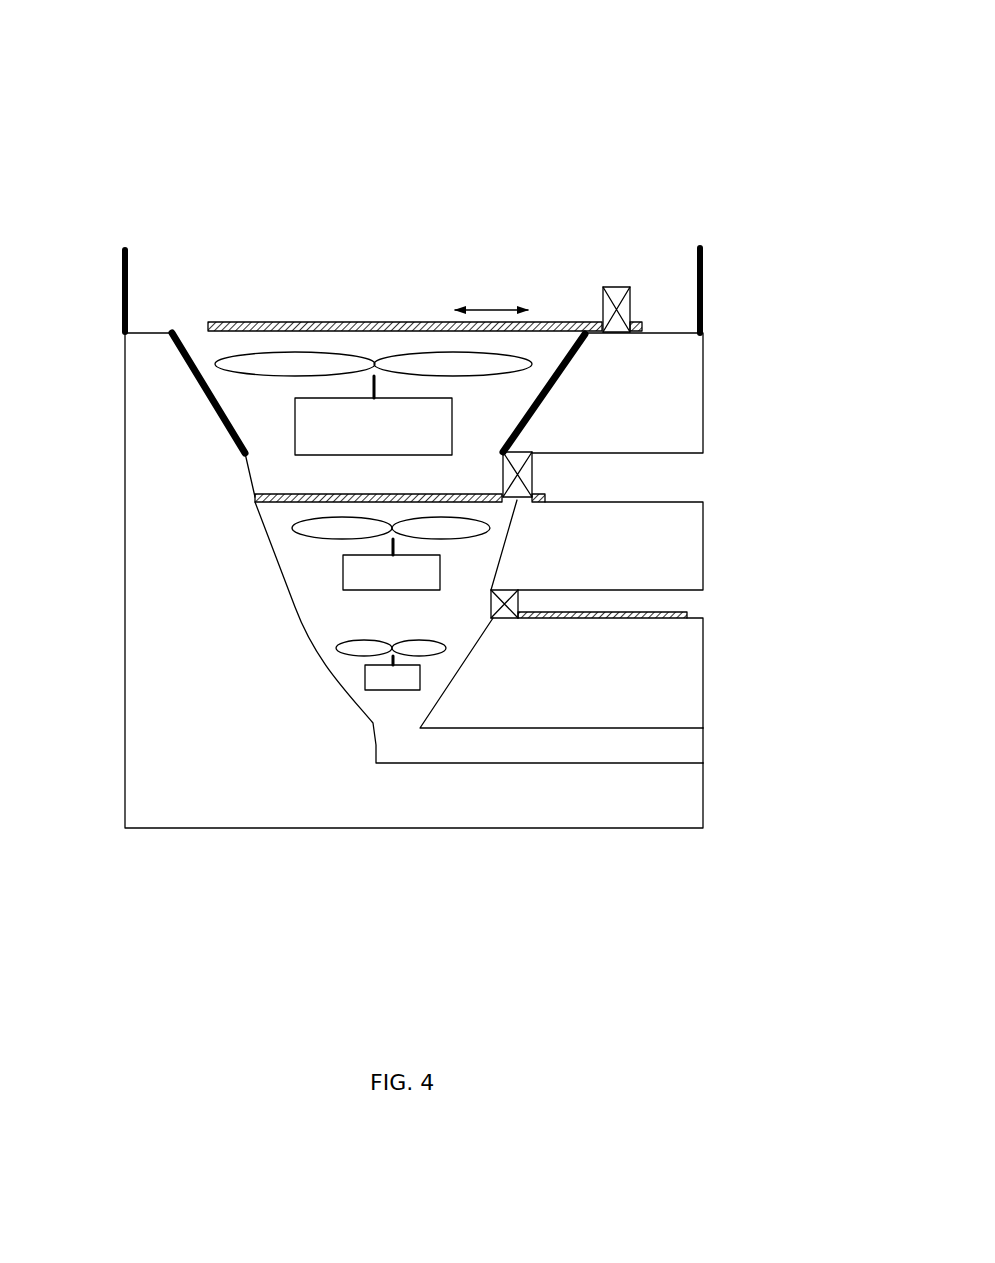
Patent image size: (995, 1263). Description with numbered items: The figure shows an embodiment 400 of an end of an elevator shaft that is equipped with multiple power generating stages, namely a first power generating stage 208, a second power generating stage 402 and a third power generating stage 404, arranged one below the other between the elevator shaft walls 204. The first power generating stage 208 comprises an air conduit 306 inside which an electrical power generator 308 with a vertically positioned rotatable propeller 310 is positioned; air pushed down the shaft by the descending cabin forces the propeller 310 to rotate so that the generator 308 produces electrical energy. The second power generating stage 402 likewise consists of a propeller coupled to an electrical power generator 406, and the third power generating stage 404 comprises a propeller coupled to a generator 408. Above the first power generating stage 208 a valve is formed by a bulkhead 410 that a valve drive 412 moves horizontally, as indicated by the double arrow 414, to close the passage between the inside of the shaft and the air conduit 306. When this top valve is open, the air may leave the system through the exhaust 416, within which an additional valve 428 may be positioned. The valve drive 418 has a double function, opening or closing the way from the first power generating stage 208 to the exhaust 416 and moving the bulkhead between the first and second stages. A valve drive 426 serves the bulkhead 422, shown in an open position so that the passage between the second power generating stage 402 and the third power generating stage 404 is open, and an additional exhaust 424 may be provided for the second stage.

The embodiment of an end of the elevator shaft 400 is at (172, 73).
The elevator shaft walls 204 is at (128, 262).
The first power generating stage 208 is at (153, 407).
The air conduit 306 is at (173, 360).
The electrical power generator 308 is at (336, 396).
The propeller 310 is at (373, 365).
The second power generating stage 402 is at (256, 510).
The third power generating stage 404 is at (278, 625).
The electrical power generator 406 is at (355, 593).
The generator 408 is at (398, 692).
The bulkhead 410 is at (180, 520).
The valve drive 412 is at (610, 285).
The double arrow 414 is at (482, 305).
The exhaust 416 is at (663, 490).
The valve drive 418 is at (525, 451).
The bulkhead 422 is at (678, 613).
The additional exhaust 424 is at (705, 603).
The valve drive 426 is at (508, 587).
The additional valve 428 is at (645, 760).